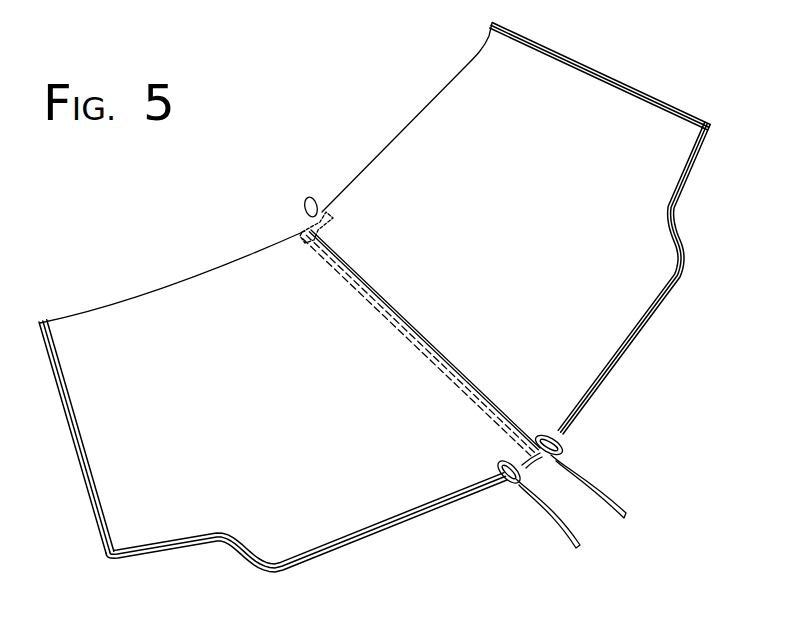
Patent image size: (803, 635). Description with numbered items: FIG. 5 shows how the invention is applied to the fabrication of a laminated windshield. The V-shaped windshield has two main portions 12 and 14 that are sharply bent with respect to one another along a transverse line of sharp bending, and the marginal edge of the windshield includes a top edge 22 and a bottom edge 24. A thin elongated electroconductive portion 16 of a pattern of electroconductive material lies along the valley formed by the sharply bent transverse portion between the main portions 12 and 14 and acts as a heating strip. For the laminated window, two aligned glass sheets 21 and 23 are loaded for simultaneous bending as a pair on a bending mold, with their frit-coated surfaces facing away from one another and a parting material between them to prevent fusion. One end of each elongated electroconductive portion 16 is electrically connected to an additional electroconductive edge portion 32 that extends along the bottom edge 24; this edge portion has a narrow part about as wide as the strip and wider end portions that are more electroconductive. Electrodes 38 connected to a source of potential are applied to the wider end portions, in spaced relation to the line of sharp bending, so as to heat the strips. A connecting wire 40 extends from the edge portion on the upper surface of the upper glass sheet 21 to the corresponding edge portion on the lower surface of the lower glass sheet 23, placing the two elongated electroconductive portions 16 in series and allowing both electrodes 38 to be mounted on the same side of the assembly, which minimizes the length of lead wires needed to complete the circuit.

The main portion 12 is at (548, 207).
The main portion 14 is at (222, 446).
The elongated electroconductive portion 16 is at (407, 329).
The upper glass sheet 21 is at (648, 325).
The top edge 22 is at (424, 102).
The lower glass sheet 23 is at (622, 360).
The bottom edge 24 is at (367, 545).
The additional electroconductive edge portion 32 is at (537, 448).
The electrodes 38 is at (567, 428).
The connecting wire 40 is at (313, 197).